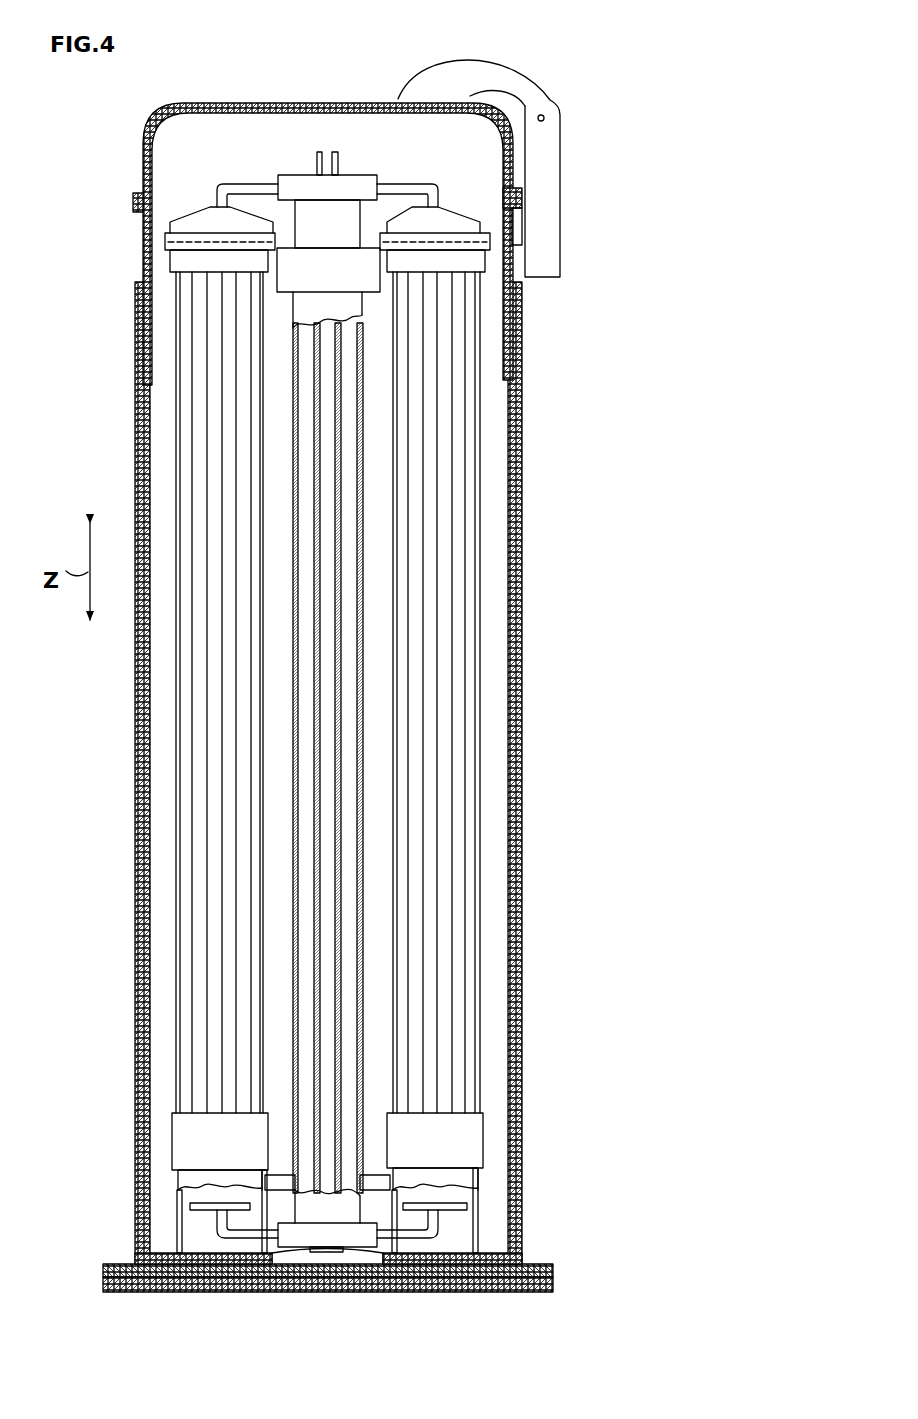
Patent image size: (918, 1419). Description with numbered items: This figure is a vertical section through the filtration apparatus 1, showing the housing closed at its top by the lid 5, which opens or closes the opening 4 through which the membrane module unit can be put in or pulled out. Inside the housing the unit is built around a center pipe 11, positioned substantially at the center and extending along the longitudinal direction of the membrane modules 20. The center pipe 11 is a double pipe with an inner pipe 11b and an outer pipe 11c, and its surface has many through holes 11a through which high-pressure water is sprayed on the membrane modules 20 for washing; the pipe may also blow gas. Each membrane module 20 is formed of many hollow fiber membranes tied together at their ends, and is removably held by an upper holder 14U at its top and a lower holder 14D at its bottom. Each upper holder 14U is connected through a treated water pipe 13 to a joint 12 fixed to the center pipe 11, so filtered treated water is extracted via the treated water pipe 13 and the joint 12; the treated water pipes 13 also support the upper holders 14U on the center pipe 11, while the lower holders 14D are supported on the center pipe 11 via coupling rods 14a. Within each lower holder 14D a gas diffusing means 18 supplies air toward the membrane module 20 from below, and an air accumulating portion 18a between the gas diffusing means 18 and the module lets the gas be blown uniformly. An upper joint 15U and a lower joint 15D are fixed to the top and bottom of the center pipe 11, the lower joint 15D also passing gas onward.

The handle 1 is at (540, 57).
The opening 4 is at (515, 450).
The lid 5 is at (325, 103).
The center pipe 11 is at (367, 308).
The through holes 11a is at (362, 475).
The inner pipe 11b is at (342, 552).
The outer pipe 11c is at (360, 615).
The joint 12 is at (295, 175).
The treated water pipe 13 is at (242, 185).
The upper holder 14U is at (193, 223).
The lower holder 14D is at (183, 1193).
The coupling rod 14a is at (265, 1190).
The upper joint 15U is at (372, 292).
The lower joint 15D is at (376, 1223).
The gas diffusing means 18 is at (188, 1207).
The air accumulating portion 18a is at (195, 1190).
The membrane module 20 is at (195, 713).